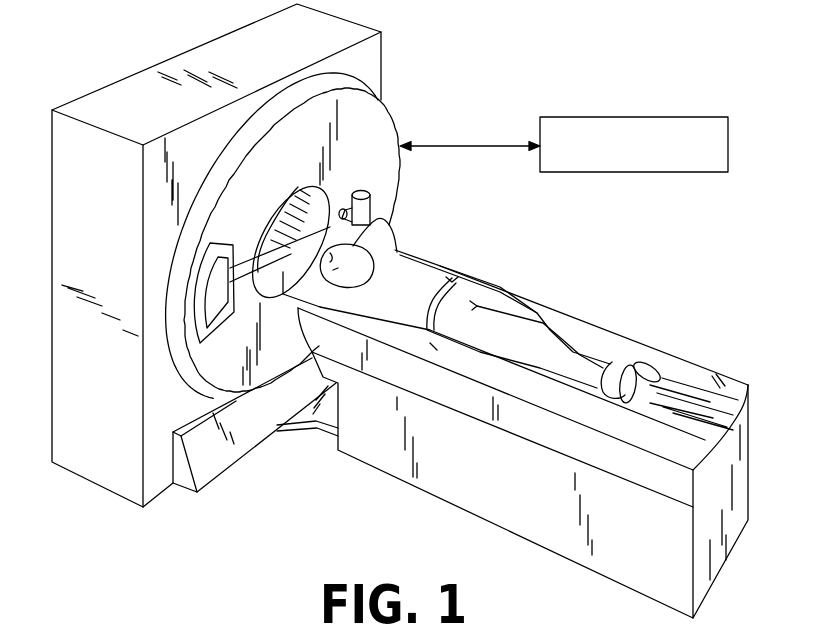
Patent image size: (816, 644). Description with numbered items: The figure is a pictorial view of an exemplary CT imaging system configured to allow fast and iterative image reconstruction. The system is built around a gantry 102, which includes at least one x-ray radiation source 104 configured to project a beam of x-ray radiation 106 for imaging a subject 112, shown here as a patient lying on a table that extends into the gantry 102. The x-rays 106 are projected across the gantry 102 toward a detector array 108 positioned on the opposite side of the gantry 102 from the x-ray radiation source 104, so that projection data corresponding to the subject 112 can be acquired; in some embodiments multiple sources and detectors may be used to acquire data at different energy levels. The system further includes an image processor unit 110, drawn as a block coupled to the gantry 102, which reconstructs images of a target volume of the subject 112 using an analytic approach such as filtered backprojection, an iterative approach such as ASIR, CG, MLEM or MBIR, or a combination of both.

The gantry 102 is at (378, 150).
The x-ray radiation source 104 is at (375, 214).
The beam of x-ray radiation 106 is at (263, 260).
The detector array 108 is at (216, 323).
The image processor unit 110 is at (685, 116).
The subject 112 is at (412, 276).